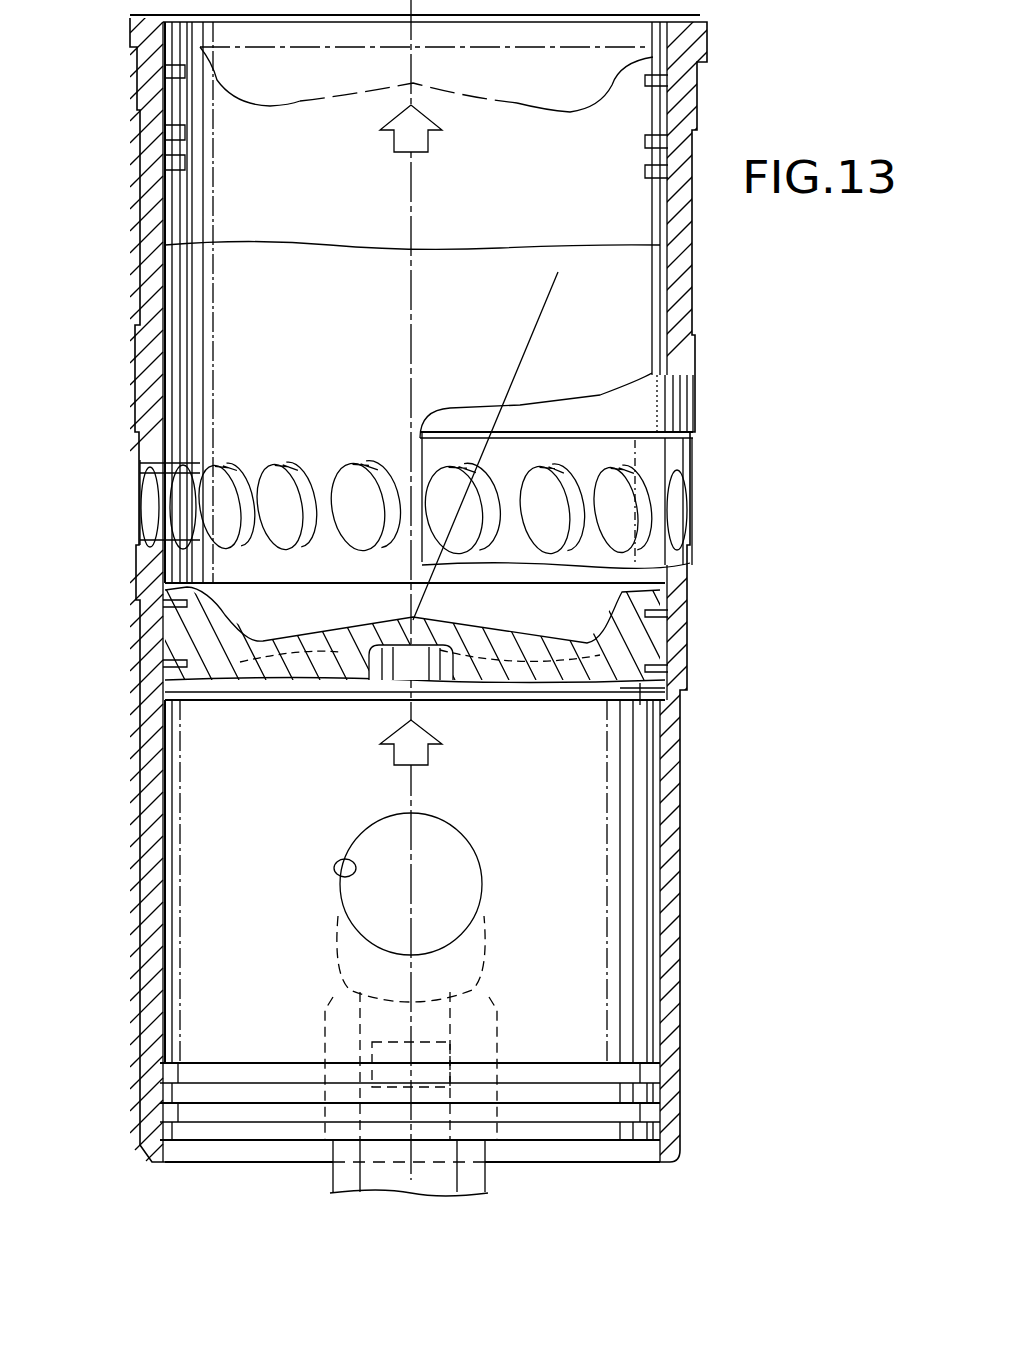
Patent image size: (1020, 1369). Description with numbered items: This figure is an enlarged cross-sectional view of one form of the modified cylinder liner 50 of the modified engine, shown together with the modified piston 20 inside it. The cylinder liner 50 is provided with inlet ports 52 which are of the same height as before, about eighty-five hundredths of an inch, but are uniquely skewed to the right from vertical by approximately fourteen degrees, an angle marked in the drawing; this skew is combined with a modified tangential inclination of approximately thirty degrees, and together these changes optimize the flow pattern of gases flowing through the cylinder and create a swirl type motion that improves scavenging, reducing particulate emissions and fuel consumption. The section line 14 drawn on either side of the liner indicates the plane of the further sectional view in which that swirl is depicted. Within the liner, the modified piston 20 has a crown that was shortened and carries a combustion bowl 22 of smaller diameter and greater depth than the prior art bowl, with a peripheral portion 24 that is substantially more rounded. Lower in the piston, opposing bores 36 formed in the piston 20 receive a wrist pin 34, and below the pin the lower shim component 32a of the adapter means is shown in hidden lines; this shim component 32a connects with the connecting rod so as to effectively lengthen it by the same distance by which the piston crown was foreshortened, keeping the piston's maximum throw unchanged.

The section line 14- 14 is at (92, 497).
The modified piston 20 is at (356, 250).
The combustion bowl 22 is at (355, 613).
The peripheral portion 24 is at (590, 640).
The lower shim component 32a is at (340, 943).
The wrist pin 34 is at (453, 838).
The opposing bores 36 is at (336, 868).
The modified cylinder liner 50 is at (690, 790).
The inlet ports 52 is at (347, 482).